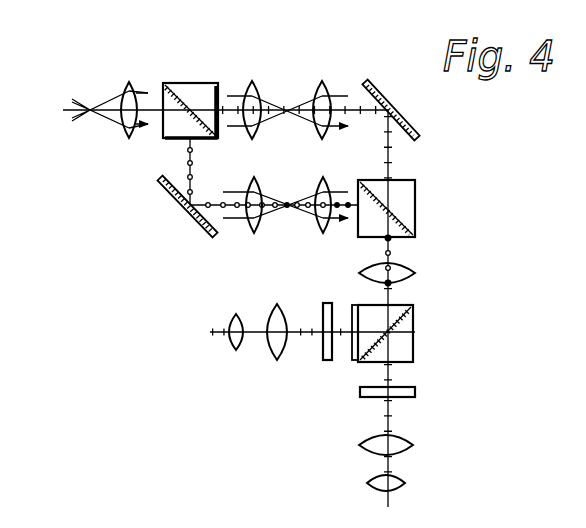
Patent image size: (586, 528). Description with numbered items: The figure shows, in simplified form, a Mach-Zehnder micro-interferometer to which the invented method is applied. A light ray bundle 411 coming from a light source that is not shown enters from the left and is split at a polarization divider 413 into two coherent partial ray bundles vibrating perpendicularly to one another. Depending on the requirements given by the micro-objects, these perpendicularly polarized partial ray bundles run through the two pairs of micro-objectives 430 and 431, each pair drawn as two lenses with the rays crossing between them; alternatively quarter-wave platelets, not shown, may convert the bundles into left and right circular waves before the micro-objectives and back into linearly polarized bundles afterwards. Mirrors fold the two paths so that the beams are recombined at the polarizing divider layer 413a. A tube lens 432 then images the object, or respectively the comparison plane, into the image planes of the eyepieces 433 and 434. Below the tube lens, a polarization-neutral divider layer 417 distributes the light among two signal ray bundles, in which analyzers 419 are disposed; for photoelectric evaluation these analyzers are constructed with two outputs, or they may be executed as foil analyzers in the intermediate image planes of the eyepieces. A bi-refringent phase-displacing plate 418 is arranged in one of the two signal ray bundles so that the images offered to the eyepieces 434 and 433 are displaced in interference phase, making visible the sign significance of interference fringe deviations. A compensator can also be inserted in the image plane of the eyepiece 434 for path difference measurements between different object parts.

The light source / input beam 411 is at (83, 110).
The polarization divider 413 is at (190, 110).
The polarizing divider layer 413a is at (398, 211).
The pair of micro-objectives 430 is at (325, 77).
The pair of micro-objectives 431 is at (332, 238).
The tube lens 432 is at (412, 277).
The polarization-neutral divider layer 417 is at (412, 330).
The bi-refringent phase-displacing plate 418 is at (355, 320).
The analyzer 419 is at (445, 387).
The eyepiece 433 is at (420, 423).
The eyepiece 434 is at (293, 366).